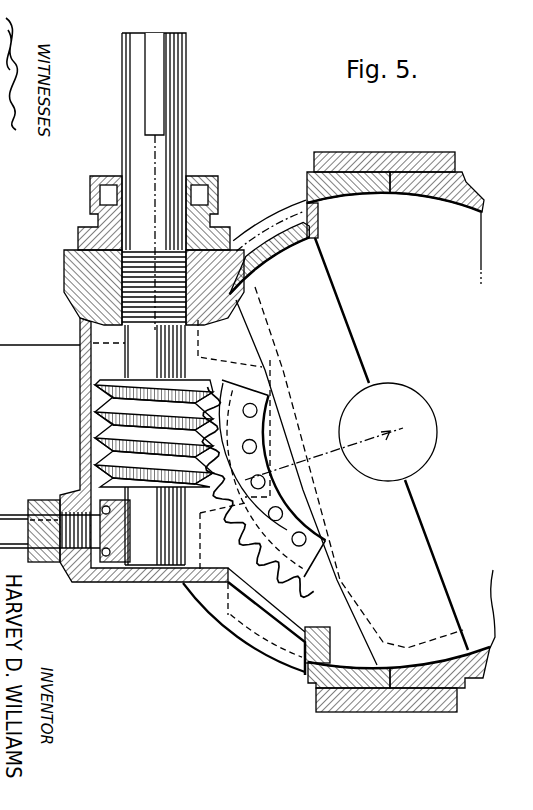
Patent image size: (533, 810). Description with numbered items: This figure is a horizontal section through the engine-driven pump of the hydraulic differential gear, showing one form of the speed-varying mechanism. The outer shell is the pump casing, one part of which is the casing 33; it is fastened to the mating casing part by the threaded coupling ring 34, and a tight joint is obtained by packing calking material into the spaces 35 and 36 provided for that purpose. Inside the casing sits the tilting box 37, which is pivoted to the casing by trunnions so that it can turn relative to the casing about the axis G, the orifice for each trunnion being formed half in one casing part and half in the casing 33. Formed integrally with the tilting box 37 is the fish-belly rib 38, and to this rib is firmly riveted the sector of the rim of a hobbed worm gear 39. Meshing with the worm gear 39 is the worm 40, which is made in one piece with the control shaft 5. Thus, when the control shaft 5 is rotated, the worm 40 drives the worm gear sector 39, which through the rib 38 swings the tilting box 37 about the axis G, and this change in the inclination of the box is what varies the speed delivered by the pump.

The control shaft 5 is at (177, 115).
The pump casing part 33 is at (278, 208).
The threaded coupling ring 34 is at (383, 157).
The calking space 35 is at (313, 684).
The calking space 36 is at (465, 690).
The tilting box 37 is at (460, 643).
The fish-belly rib 38 is at (322, 567).
The hobbed worm gear 39 is at (293, 578).
The worm 40 is at (102, 382).
The axis of tilting box G is at (341, 432).